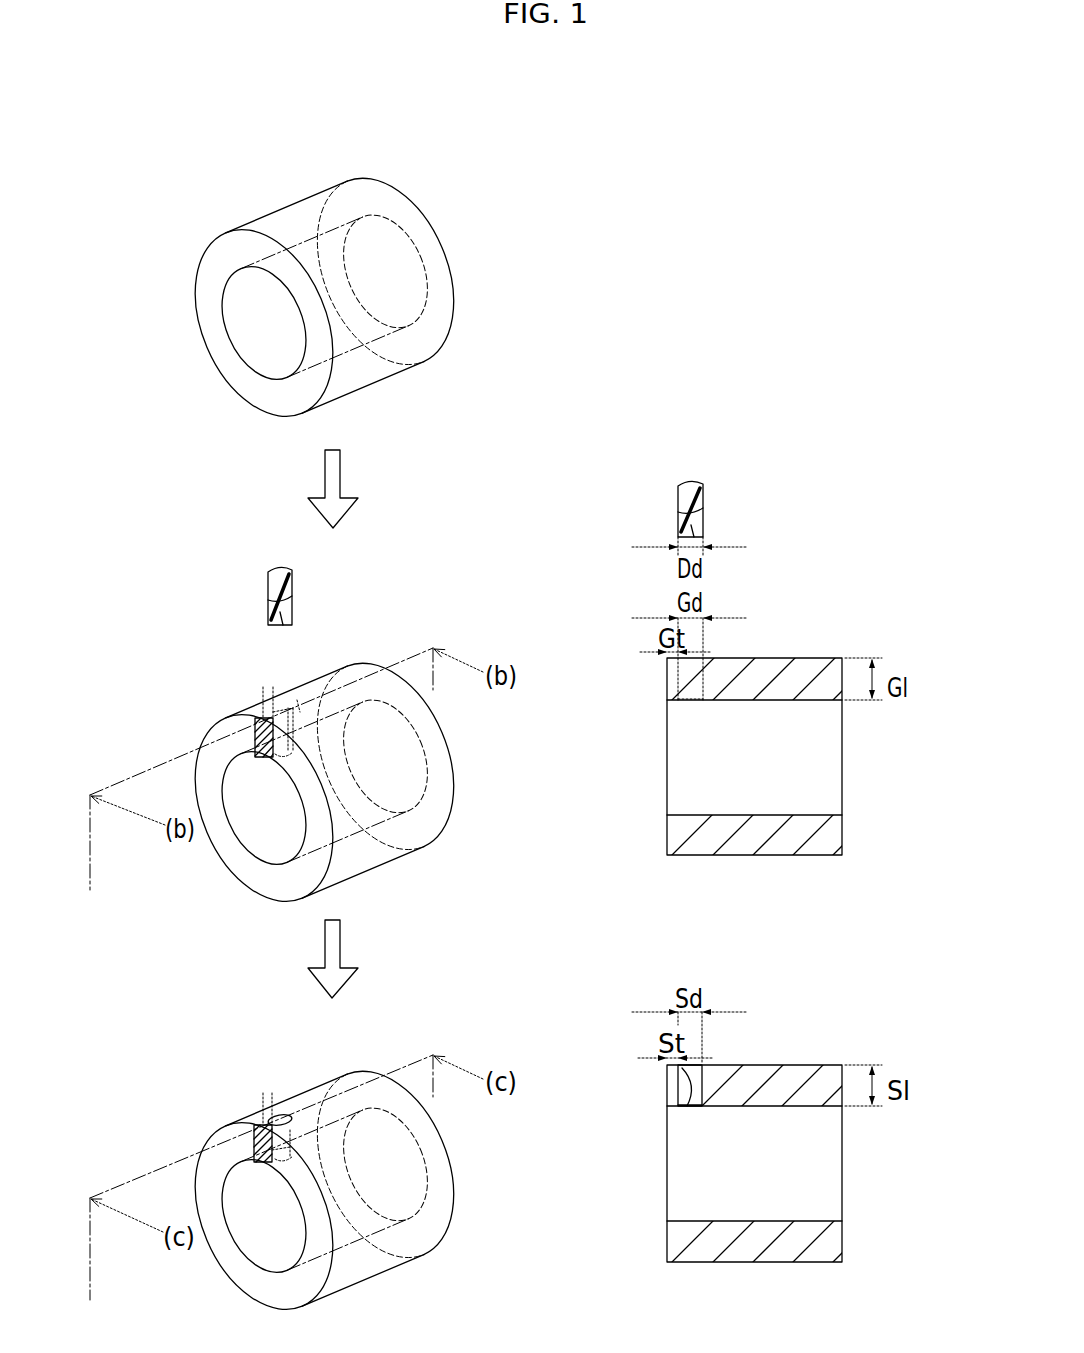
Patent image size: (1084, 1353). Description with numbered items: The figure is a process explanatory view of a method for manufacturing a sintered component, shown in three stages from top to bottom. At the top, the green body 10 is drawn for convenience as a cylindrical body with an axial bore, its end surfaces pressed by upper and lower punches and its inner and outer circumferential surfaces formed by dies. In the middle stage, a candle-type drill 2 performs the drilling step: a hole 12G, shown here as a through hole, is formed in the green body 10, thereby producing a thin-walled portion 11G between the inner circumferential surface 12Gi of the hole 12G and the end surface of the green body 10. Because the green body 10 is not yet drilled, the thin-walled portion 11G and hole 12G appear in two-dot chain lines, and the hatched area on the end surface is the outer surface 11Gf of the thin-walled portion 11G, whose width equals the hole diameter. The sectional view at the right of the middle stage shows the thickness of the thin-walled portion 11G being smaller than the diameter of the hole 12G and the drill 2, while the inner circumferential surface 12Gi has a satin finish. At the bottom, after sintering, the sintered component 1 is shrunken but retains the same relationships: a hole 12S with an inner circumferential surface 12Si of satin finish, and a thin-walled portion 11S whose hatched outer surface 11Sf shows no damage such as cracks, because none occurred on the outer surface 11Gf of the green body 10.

The green body 10 is at (447, 196).
The sintered component 1 is at (385, 1063).
The candle-type drill 2 is at (293, 582).
The thin-walled portion 11G is at (667, 665).
The hole 12G is at (298, 700).
The outer surface of the thin-walled portion 11Gf is at (250, 727).
The inner circumferential surface of the hole 12Gi is at (690, 698).
The thin-walled portion 11S is at (667, 1077).
The hole 12S is at (284, 1113).
The outer surface of the thin-walled portion 11Sf is at (243, 1133).
The inner circumferential surface of the hole 12Si is at (687, 1107).